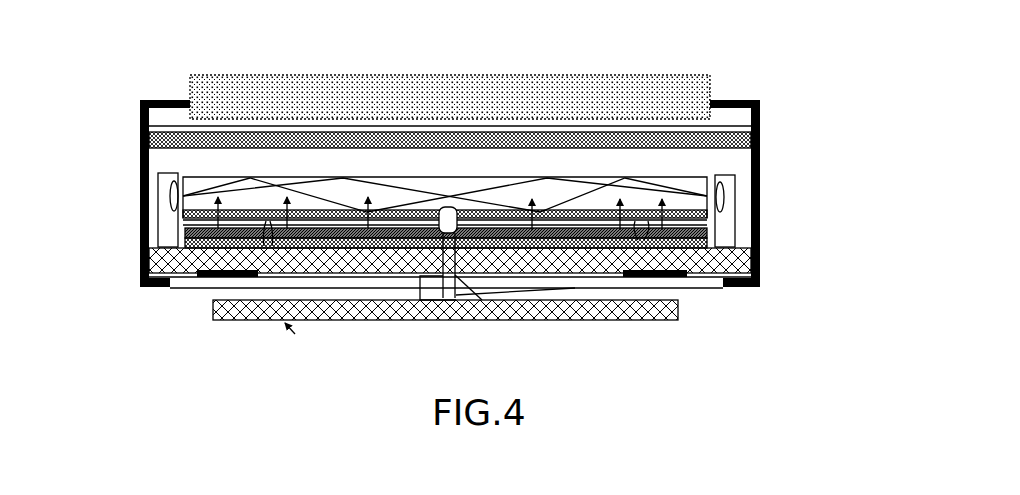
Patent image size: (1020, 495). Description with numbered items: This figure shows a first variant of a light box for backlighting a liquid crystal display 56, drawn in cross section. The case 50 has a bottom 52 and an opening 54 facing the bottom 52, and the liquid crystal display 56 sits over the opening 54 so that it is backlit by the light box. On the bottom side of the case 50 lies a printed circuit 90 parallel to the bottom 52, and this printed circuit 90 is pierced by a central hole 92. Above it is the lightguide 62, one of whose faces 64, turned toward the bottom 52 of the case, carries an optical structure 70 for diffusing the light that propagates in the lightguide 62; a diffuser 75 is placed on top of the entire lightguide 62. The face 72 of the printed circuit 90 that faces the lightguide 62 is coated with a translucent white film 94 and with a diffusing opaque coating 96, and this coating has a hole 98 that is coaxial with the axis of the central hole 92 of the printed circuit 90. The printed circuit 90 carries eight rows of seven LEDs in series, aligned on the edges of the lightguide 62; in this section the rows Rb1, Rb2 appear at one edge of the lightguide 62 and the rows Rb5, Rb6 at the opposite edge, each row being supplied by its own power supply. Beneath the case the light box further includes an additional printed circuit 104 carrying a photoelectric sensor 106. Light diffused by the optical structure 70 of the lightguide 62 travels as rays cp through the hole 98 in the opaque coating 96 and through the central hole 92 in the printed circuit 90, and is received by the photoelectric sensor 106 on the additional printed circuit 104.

The housing frame 50 is at (757, 217).
The bottom 52 is at (743, 288).
The opening 54 is at (728, 87).
The liquid crystal display 56 is at (528, 95).
The lightguide 62 is at (472, 192).
The face 64 is at (517, 212).
The optical structure 70 is at (599, 222).
The face 72 is at (237, 230).
The diffuser 75 is at (163, 150).
The printed circuit 90 is at (755, 253).
The central hole 92 is at (460, 288).
The translucent white film 94 is at (323, 243).
The diffusing opaque coating 96 is at (379, 233).
The hole 98 is at (440, 208).
The additional printed circuit 104 is at (243, 320).
The photoelectric sensor 106 is at (462, 300).
The rays cp is at (421, 302).
The row of LEDs Rb1 is at (121, 208).
The row of LEDs Rb2 is at (158, 197).
The row of LEDs Rb5 is at (777, 186).
The row of LEDs Rb6 is at (737, 190).